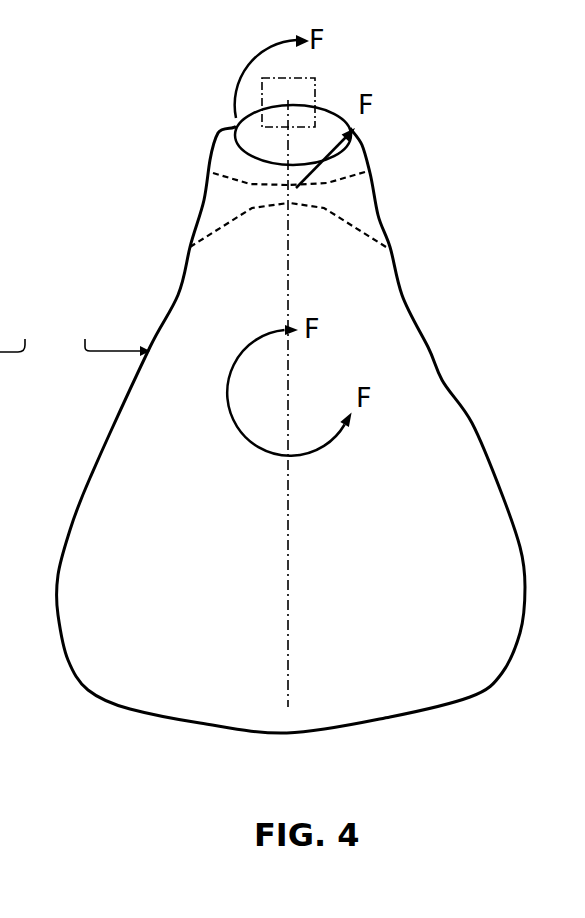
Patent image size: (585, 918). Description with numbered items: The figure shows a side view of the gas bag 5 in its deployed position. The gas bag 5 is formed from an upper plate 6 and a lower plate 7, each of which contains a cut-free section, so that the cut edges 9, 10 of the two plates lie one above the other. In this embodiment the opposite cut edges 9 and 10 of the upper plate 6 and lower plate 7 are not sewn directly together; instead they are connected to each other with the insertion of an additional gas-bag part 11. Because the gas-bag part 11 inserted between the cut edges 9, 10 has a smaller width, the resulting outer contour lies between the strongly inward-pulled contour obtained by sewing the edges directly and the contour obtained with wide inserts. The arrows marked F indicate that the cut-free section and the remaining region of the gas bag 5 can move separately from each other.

The gas bag 5 is at (75, 334).
The upper plate 6 is at (472, 423).
The lower plate 7 is at (107, 433).
The cut edge 9 is at (250, 185).
The cut edge 10 is at (250, 212).
The gas-bag part 11 is at (297, 187).